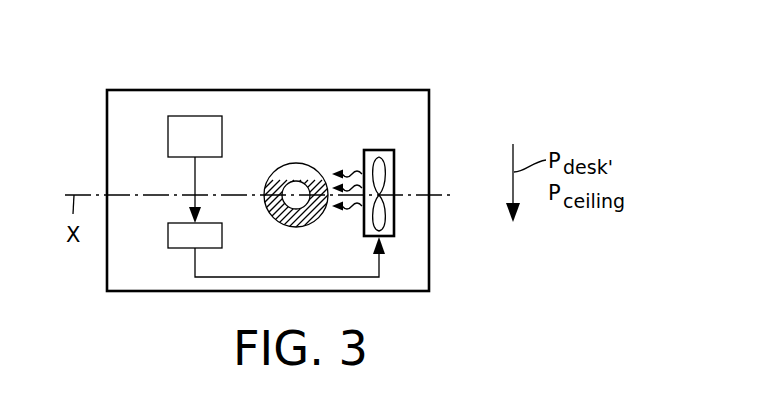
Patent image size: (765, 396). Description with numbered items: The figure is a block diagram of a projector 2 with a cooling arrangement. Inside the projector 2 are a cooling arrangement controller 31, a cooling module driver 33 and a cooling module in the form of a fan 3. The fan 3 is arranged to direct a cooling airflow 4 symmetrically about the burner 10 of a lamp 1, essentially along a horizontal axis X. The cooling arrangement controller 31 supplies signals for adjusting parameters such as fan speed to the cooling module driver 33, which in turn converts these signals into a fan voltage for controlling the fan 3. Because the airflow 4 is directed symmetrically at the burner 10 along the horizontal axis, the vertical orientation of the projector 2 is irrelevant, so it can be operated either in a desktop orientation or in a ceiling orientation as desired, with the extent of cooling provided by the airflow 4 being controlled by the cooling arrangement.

The projector 2 is at (450, 71).
The lamp 1 is at (291, 165).
The burner 10 is at (298, 203).
The fan 3 is at (395, 172).
The cooling airflow 4 is at (361, 175).
The cooling arrangement controller 31 is at (172, 136).
The cooling module driver 33 is at (172, 234).